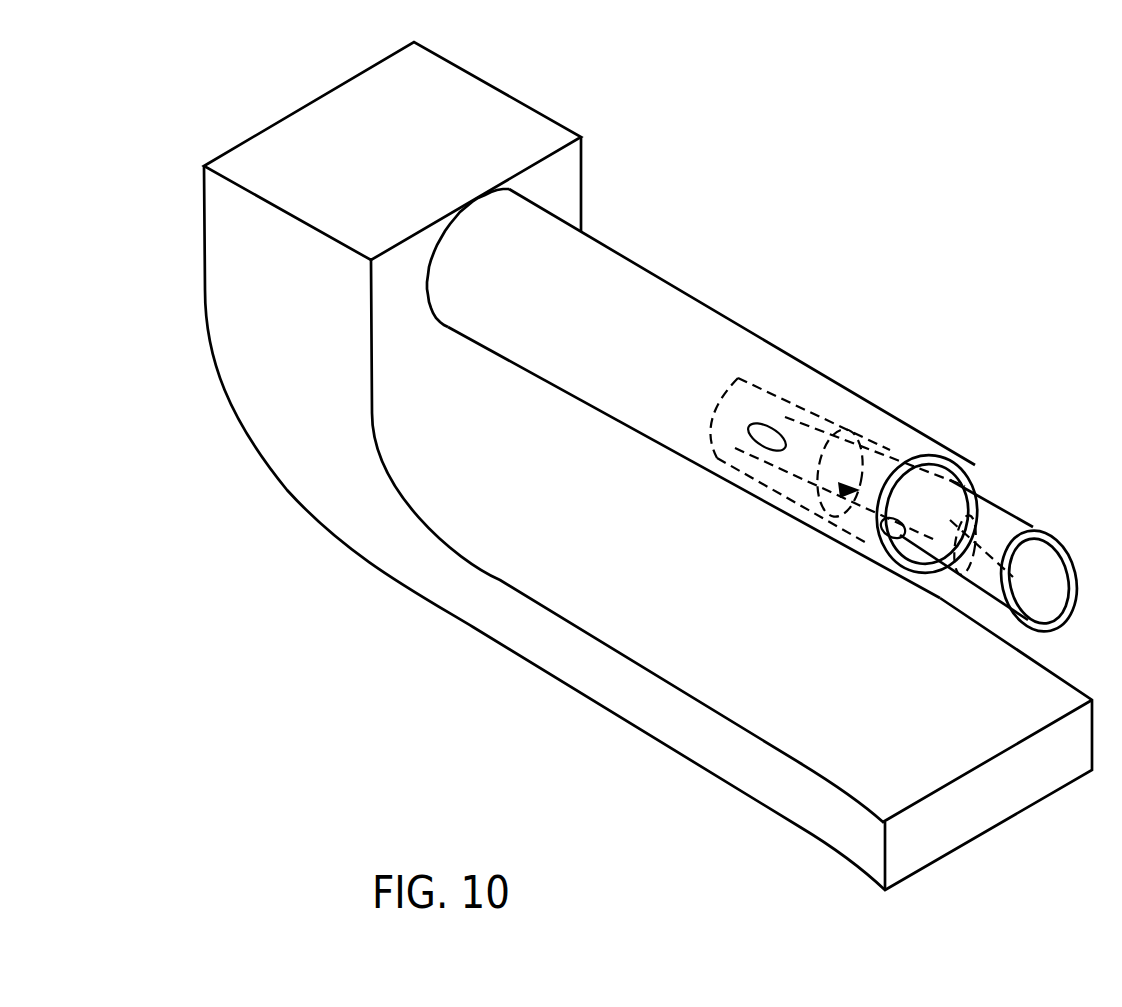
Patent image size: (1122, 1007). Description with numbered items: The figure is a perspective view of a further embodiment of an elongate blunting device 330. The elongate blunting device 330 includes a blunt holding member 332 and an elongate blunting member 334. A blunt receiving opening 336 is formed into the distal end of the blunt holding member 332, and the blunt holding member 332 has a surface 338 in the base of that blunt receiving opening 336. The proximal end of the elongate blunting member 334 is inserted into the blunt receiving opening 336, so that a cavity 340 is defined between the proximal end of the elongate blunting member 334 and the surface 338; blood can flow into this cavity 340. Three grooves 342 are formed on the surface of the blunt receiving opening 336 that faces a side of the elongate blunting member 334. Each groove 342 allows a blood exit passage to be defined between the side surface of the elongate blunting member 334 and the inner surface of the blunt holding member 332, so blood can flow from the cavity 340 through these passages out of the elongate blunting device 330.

The elongate blunting device 330 is at (663, 170).
The blunt holding member 332 is at (840, 410).
The elongate blunting member 334 is at (905, 512).
The blunt receiving opening 336 is at (878, 455).
The surface 338 is at (719, 392).
The cavity 340 is at (758, 408).
The grooves 342 is at (878, 553).